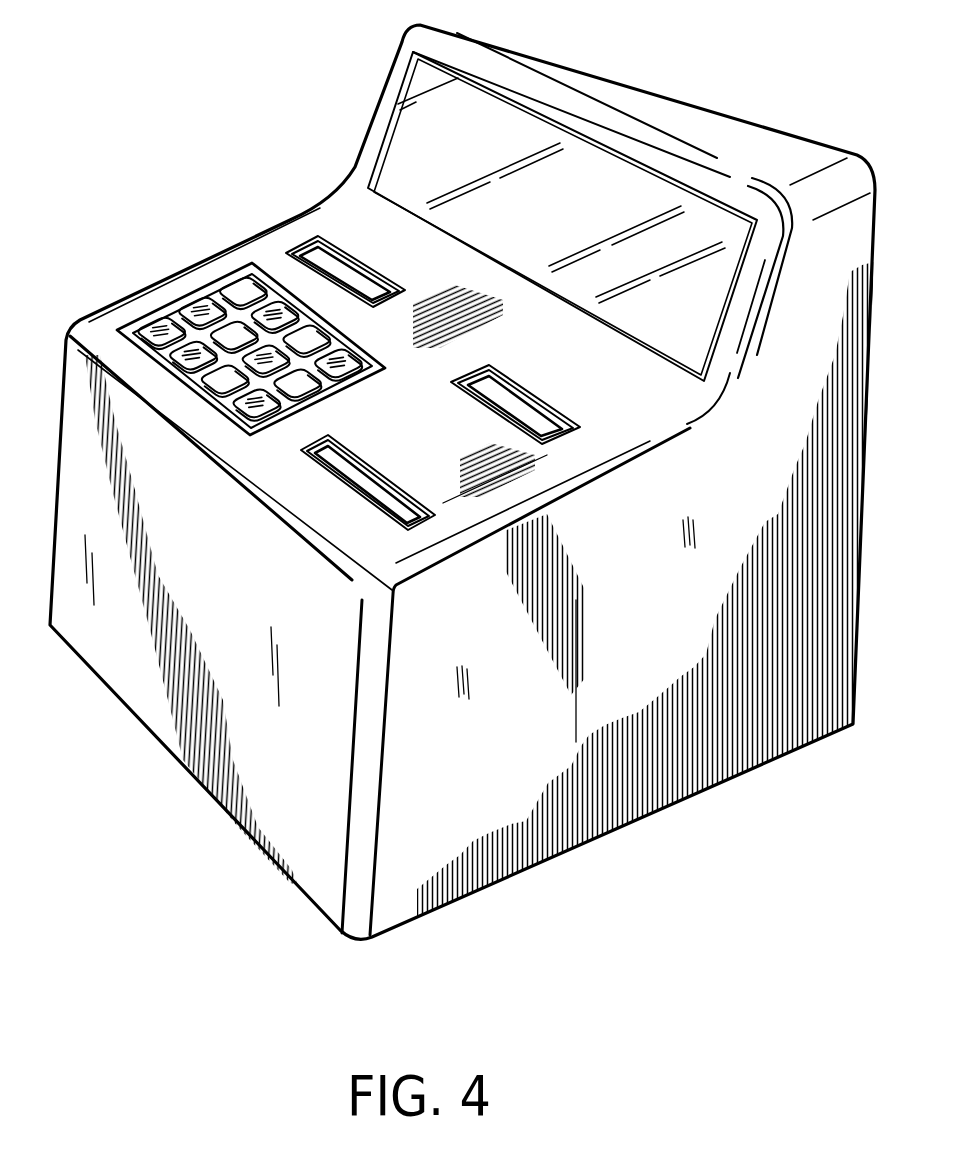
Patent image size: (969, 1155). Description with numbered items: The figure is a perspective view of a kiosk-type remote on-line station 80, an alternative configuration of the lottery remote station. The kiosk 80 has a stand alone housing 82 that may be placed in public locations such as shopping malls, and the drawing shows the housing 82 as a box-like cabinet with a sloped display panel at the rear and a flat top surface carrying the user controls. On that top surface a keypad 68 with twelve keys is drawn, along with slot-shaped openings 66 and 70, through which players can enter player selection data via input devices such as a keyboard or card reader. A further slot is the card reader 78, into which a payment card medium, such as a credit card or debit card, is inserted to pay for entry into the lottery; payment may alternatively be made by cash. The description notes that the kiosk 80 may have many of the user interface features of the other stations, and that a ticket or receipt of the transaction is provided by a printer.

The card slot 66 is at (324, 253).
The keypad 68 is at (197, 298).
The slot 70 is at (370, 478).
The card reader 78 is at (548, 408).
The kiosk-type remote on-line station 80 is at (462, 482).
The stand alone housing 82 is at (162, 725).